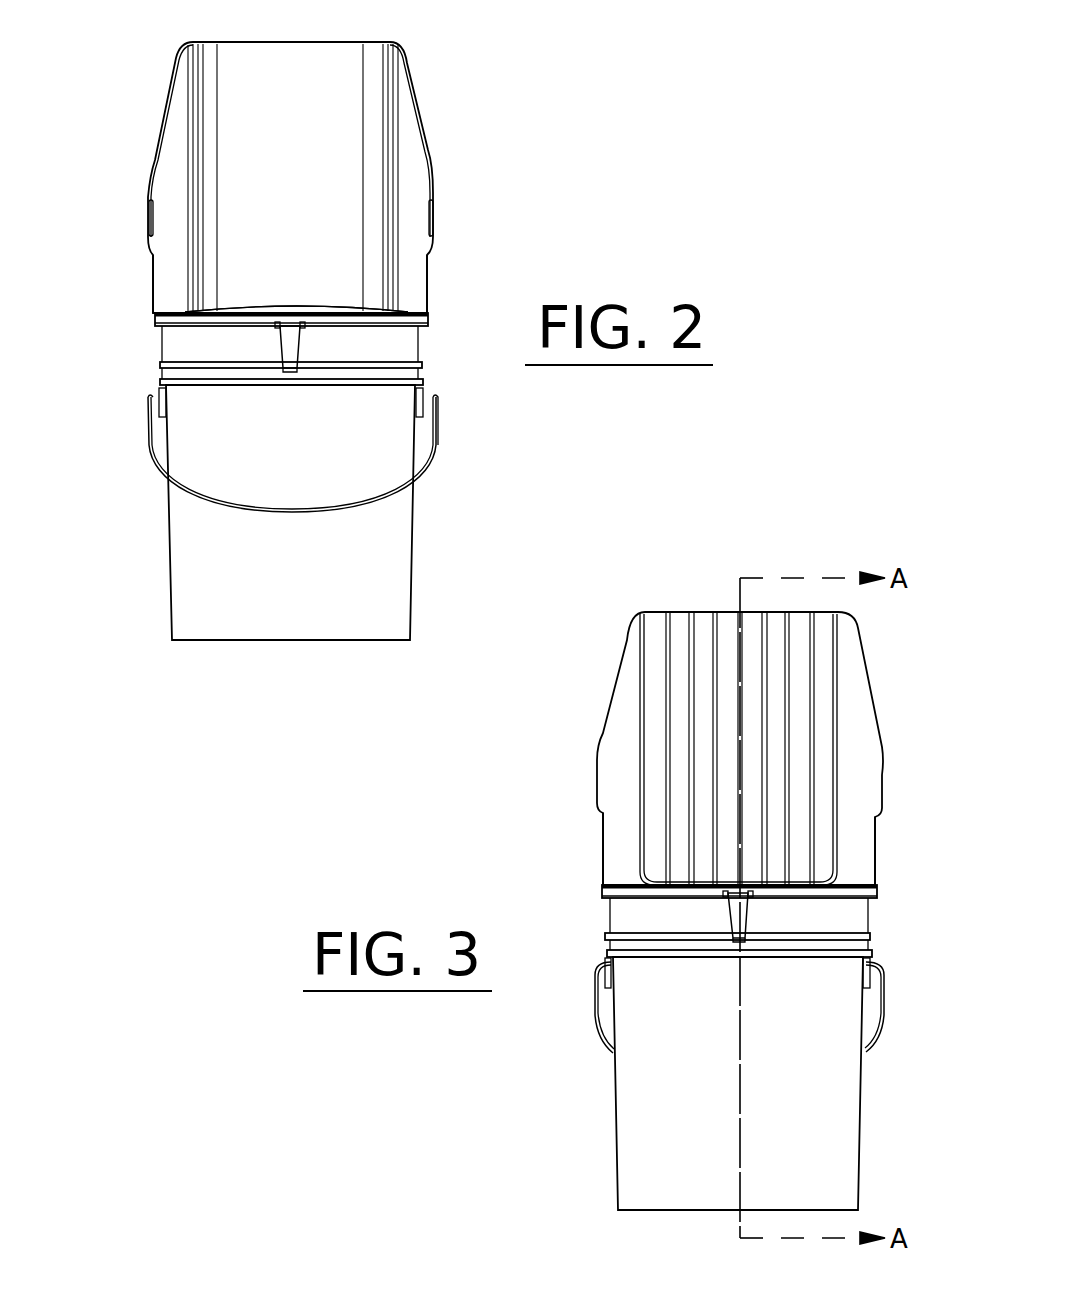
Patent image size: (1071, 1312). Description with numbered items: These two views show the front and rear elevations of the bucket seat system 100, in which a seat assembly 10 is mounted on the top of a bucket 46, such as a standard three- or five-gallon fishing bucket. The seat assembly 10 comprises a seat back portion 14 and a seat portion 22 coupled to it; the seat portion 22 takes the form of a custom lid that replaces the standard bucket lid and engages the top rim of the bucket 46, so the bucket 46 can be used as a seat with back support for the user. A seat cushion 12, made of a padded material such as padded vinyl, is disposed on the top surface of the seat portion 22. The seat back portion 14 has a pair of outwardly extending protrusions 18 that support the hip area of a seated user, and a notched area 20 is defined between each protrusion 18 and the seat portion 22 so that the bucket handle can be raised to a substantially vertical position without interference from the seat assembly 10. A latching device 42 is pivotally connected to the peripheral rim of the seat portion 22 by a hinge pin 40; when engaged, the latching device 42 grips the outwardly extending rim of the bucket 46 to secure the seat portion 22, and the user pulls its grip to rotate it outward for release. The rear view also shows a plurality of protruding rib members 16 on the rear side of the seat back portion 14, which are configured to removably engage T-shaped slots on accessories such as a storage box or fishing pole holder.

In FIG. 2, the seat assembly 10 is at (160, 31).
In FIG. 3, the seat assembly 10 is at (610, 611).
In FIG. 2, the seat cushion 12 is at (215, 310).
In FIG. 2, the seat back portion 14 is at (388, 150).
In FIG. 3, the seat back portion 14 is at (613, 740).
In FIG. 3, the protruding rib members 16 is at (670, 612).
In FIG. 2, the outwardly extending protrusions 18 is at (150, 237).
In FIG. 2, the notched area 20 is at (157, 265).
In FIG. 3, the notched area 20 is at (603, 840).
In FIG. 2, the seat portion 22 is at (158, 322).
In FIG. 3, the seat portion 22 is at (605, 897).
In FIG. 3, the hinge pin 40 is at (728, 893).
In FIG. 2, the latching device 42 is at (300, 346).
In FIG. 3, the latching device 42 is at (743, 912).
In FIG. 2, the bucket 46 is at (405, 533).
In FIG. 3, the bucket 46 is at (847, 1096).
In FIG. 2, the bucket seat system 100 is at (142, 648).
In FIG. 3, the bucket seat system 100 is at (577, 1217).